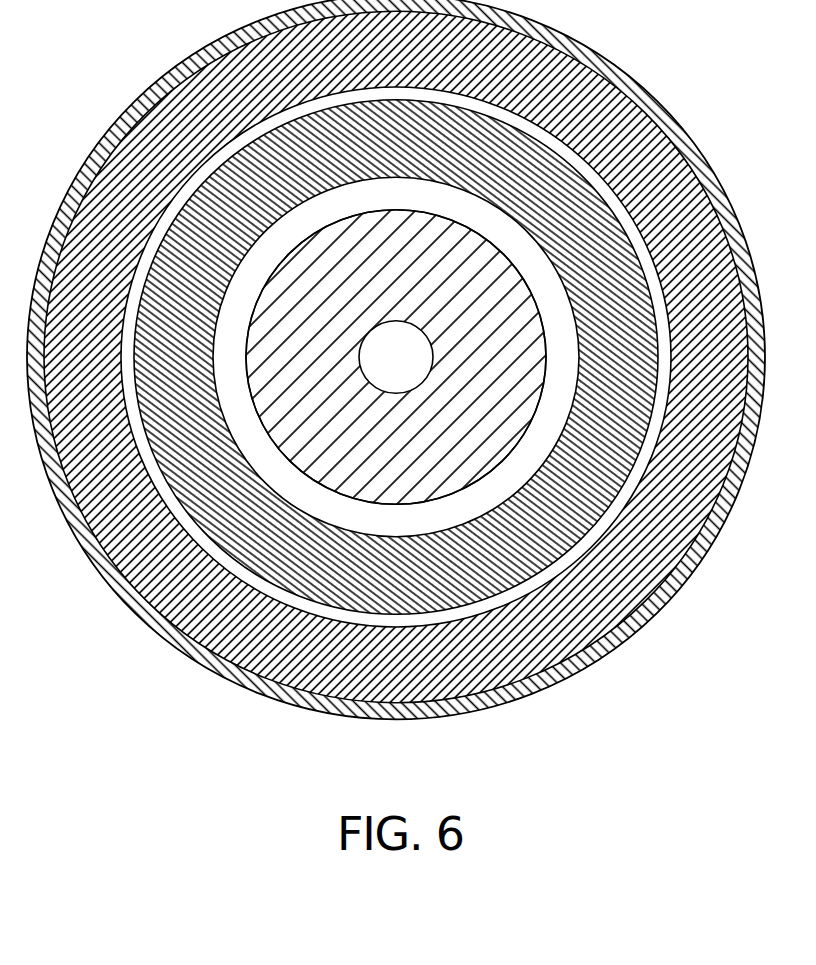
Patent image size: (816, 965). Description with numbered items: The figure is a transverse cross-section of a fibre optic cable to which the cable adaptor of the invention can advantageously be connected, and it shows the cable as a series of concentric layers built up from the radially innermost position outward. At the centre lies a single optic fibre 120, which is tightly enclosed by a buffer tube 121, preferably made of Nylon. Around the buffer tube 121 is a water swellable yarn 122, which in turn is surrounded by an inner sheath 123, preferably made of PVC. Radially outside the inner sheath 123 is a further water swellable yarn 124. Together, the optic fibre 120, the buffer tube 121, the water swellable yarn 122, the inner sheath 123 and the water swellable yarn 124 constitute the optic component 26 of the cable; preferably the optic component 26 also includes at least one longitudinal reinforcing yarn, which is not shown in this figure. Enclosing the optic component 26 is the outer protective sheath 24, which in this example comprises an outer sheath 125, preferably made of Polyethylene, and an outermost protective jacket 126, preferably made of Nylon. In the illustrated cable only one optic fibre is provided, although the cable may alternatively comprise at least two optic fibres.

The outer protective sheath 24 is at (408, 406).
The optic component 26 is at (408, 370).
The optic fibre 120 is at (385, 378).
The buffer tube 121 is at (372, 490).
The water swellable yarn 122 is at (396, 491).
The inner sheath 123 is at (446, 582).
The water swellable yarn 124 is at (495, 605).
The outer sheath 125 is at (542, 650).
The protective jacket 126 is at (587, 667).